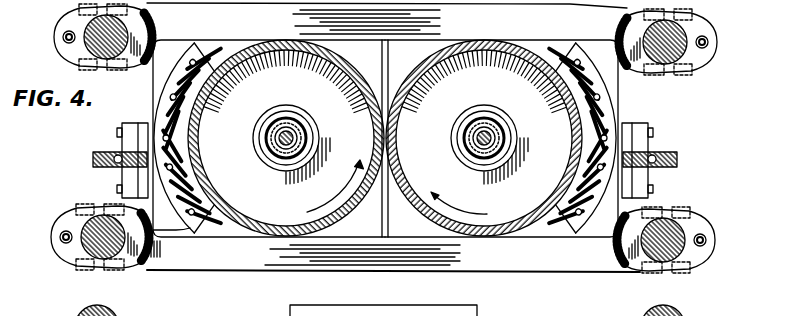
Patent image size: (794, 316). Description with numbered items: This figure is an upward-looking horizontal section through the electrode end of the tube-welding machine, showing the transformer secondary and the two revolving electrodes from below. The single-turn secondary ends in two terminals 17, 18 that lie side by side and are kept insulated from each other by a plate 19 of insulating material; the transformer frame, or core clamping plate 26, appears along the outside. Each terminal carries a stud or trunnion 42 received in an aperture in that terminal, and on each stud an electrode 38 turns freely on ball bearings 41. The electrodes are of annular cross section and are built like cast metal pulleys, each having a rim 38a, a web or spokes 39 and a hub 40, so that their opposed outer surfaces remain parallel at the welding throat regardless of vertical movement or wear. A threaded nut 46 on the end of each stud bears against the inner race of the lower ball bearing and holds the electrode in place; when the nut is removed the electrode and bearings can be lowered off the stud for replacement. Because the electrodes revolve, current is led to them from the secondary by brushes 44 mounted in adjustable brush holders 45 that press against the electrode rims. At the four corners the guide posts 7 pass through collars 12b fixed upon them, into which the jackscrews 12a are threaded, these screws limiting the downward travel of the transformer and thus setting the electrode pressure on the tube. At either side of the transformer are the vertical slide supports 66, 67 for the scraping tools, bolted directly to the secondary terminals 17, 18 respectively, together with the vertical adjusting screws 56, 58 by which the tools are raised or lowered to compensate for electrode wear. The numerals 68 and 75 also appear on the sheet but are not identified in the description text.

The guide posts 7 is at (77, 43).
The jackscrews 12a is at (742, 239).
The collars 12b is at (73, 20).
The secondary terminal 17 is at (269, 138).
The secondary terminal 18 is at (501, 138).
The insulating plate 19 is at (388, 220).
The core clamping plate 26 is at (208, 271).
The electrodes 38 is at (262, 234).
The rim 38a is at (500, 50).
The web or spokes 39 is at (313, 58).
The hub 40 is at (284, 163).
The ball bearings 41 is at (268, 129).
The studs or trunnions 42 is at (266, 152).
The brushes 44 is at (213, 72).
The brush holders 45 is at (192, 235).
The threaded nuts 46 is at (298, 132).
The vertical adjusting screw 56 is at (653, 152).
The vertical adjusting screw 58 is at (121, 152).
The vertical slide support 66 is at (670, 163).
The vertical slide support 67 is at (93, 162).
The housing (next figure) 68 is at (374, 310).
The member (next figure) 75 is at (529, 313).